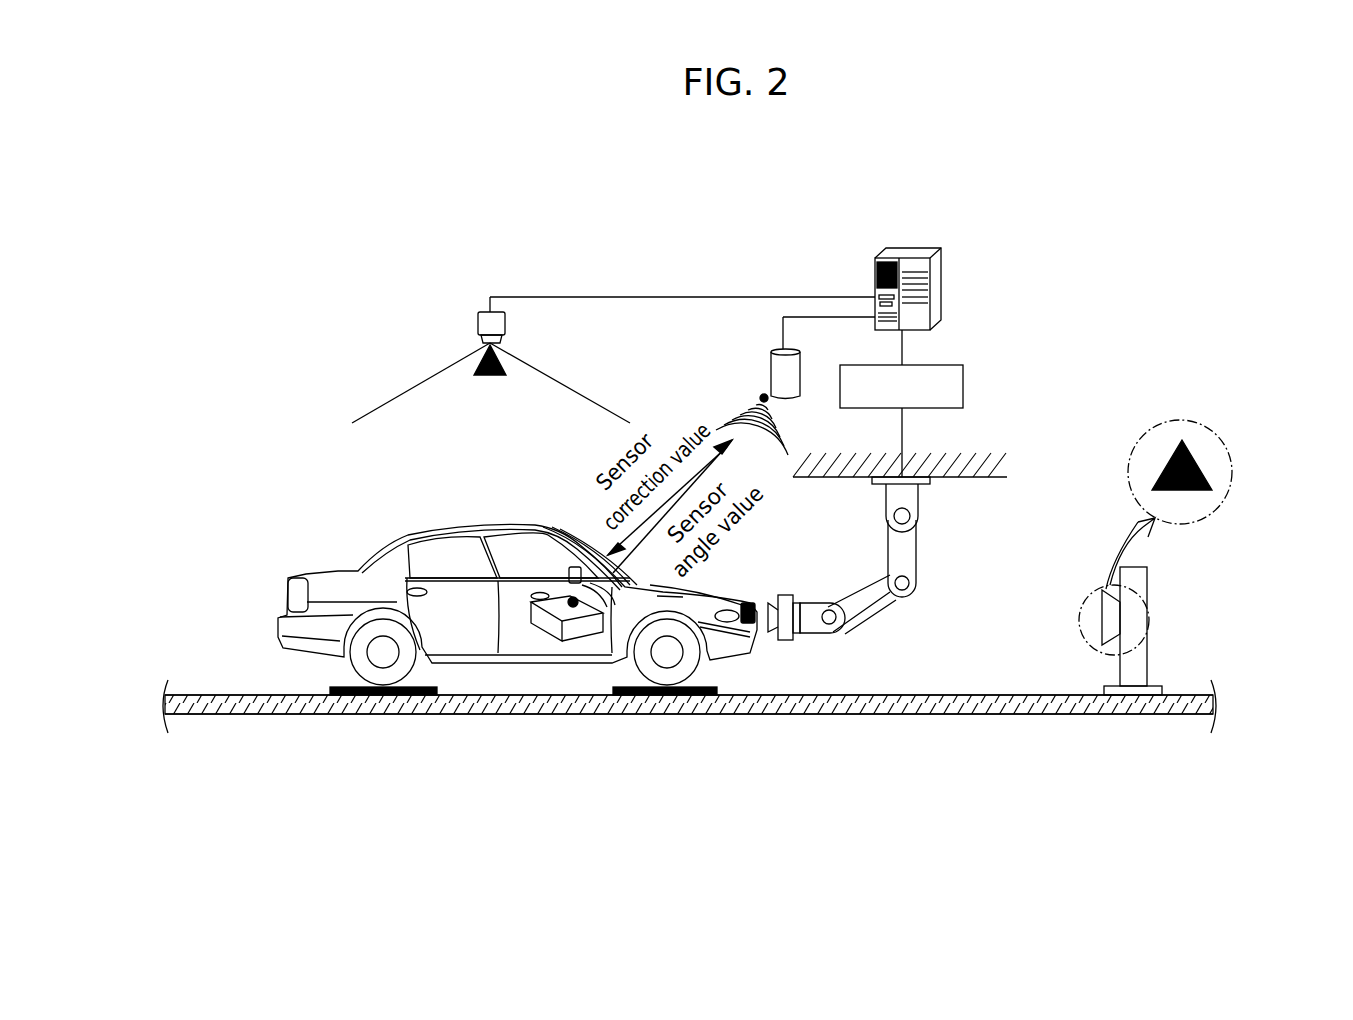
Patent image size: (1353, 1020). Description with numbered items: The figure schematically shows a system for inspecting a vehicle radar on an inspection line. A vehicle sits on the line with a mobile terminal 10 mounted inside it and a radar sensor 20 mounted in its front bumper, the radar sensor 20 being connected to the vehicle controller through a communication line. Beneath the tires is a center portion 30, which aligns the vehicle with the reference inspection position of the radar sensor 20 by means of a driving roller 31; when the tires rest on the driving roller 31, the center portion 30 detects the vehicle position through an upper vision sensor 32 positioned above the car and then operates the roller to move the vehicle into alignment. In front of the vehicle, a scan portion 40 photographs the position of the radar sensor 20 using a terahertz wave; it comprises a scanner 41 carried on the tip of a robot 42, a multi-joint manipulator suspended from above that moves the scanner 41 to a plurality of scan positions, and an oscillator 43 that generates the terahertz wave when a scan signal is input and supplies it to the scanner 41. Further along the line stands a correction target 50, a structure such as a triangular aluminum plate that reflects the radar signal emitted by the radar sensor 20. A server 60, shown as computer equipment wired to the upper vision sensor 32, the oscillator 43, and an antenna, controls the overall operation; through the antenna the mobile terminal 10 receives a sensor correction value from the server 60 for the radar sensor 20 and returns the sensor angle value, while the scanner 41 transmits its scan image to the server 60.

The mobile terminal 10 is at (573, 602).
The radar sensor 20 is at (757, 630).
The center portion 30 is at (353, 745).
The driving roller 31 is at (383, 695).
The upper vision sensor 32 is at (477, 320).
The scan portion 40 is at (917, 546).
The scanner 41 is at (784, 593).
The robot 42 is at (907, 555).
The oscillator 43 is at (965, 386).
The correction target 50 is at (1170, 453).
The server 60 is at (912, 247).